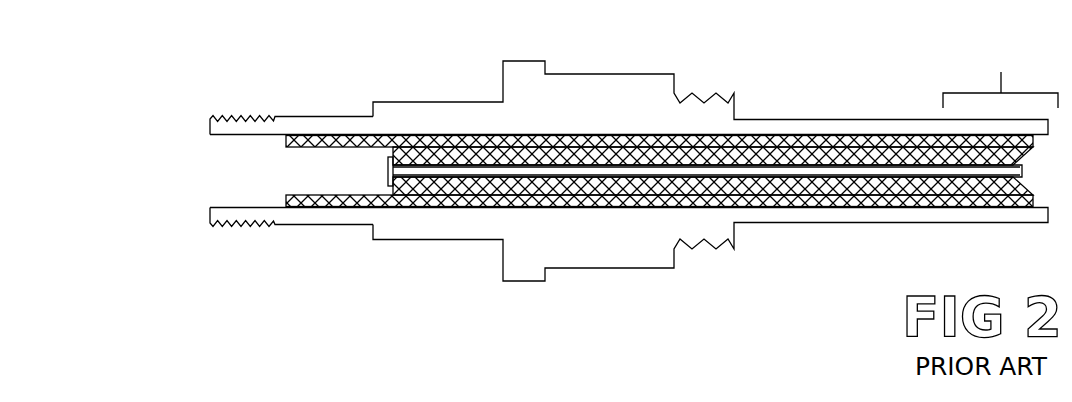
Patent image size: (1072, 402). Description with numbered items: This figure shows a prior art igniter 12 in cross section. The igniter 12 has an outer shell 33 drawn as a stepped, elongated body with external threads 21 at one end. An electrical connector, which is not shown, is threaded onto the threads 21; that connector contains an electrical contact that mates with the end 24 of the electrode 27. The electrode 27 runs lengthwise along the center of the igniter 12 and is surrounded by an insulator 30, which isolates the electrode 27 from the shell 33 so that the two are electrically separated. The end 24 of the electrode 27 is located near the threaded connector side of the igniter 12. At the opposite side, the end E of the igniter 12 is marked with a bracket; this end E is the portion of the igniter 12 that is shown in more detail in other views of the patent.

The igniter 12 is at (612, 182).
The threads 21 is at (264, 257).
The end of electrode 24 is at (388, 172).
The electrode 27 is at (452, 169).
The insulator 30 is at (336, 147).
The shell 33 is at (430, 102).
The end of igniter E is at (1000, 74).